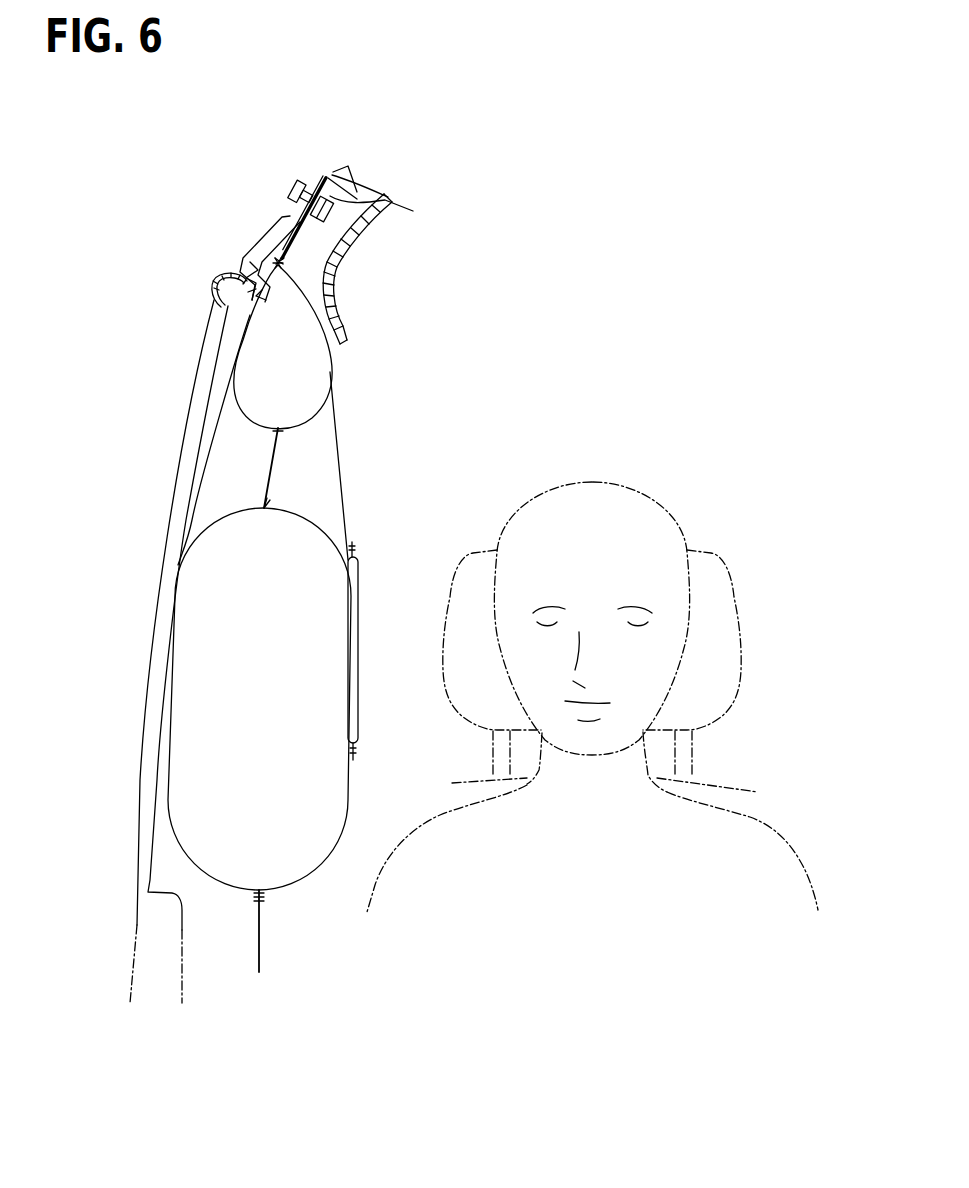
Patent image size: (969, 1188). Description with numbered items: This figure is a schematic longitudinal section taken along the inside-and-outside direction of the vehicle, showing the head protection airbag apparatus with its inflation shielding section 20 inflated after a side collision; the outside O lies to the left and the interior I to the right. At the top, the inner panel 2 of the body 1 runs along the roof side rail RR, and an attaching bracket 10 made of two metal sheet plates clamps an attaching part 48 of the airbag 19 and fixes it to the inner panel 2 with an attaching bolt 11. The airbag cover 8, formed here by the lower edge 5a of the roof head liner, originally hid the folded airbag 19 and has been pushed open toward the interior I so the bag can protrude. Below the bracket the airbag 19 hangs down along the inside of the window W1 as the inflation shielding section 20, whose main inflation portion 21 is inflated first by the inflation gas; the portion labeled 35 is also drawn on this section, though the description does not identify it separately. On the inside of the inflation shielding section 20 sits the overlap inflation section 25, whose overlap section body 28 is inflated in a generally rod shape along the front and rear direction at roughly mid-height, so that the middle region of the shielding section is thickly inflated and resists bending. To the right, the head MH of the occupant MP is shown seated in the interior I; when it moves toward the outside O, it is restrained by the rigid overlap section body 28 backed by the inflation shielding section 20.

The body 1 is at (256, 218).
The inner panel 2 is at (262, 238).
The attaching bracket 10 is at (327, 182).
The attaching bolt 11 is at (290, 181).
The attaching part 48 is at (353, 200).
The roof side rail RR is at (378, 233).
The lower edge of roof head liner 5a is at (343, 285).
The airbag cover 8 is at (398, 269).
The airbag 19 is at (371, 360).
The inflation shielding section 20 is at (203, 408).
The main inflation portion 21 is at (166, 440).
The airbag outer wall 35 is at (185, 547).
The overlap inflation section 25 is at (393, 616).
The overlap section body 28 is at (365, 575).
The window W1 is at (142, 732).
The head of occupant MH is at (658, 502).
The occupant MP is at (757, 815).
The outside O is at (104, 980).
The interior I is at (784, 980).